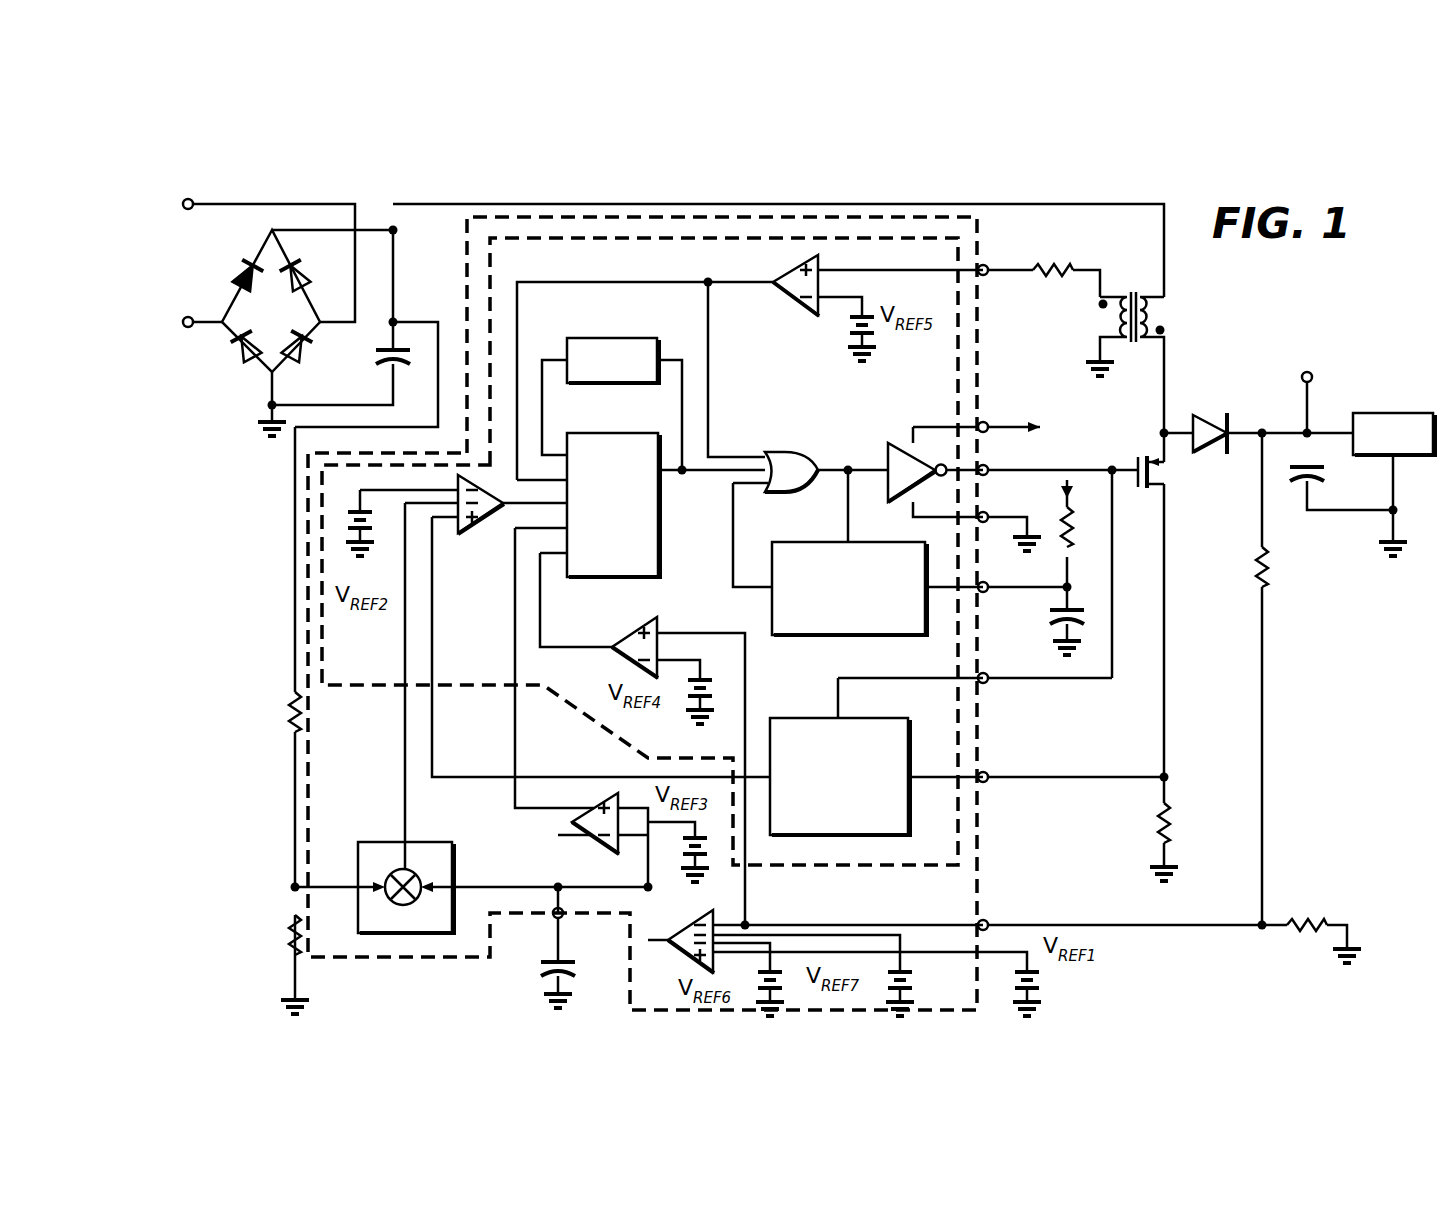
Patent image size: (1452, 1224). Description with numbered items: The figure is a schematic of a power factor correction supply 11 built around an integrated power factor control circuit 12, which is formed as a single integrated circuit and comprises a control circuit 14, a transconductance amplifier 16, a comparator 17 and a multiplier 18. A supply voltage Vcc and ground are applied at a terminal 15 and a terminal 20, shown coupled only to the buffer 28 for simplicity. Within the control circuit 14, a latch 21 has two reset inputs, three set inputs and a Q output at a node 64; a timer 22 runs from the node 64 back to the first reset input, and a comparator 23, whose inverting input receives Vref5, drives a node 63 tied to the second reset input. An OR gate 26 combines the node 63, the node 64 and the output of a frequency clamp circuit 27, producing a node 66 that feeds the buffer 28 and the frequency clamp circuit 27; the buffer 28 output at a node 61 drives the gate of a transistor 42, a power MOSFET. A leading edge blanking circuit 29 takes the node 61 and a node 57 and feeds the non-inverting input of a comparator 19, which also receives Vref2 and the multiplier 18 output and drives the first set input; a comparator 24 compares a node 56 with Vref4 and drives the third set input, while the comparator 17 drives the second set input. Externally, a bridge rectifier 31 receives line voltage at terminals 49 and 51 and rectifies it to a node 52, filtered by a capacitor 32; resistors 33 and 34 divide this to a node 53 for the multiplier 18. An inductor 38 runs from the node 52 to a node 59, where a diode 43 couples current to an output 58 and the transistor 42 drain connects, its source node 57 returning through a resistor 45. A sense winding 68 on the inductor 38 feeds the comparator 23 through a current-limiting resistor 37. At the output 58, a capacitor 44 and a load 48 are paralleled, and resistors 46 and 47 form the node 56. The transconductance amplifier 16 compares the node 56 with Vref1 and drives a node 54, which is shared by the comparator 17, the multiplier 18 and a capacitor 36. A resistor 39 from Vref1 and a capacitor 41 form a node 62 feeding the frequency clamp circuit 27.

The power supply 11 is at (1298, 312).
The integrated power factor control circuit 12 is at (975, 225).
The control circuit 14 is at (892, 868).
The terminal 15 is at (988, 424).
The transconductance amplifier 16 is at (668, 952).
The comparator 17 is at (592, 806).
The multiplier 18 is at (452, 872).
The comparator 19 is at (480, 536).
The terminal 20 is at (988, 524).
The latch 21 is at (659, 540).
The timer 22 is at (566, 340).
The comparator 23 is at (790, 300).
The comparator 24 is at (616, 638).
The OR gate 26 is at (806, 452).
The frequency clamp circuit 27 is at (770, 608).
The buffer 28 is at (875, 455).
The leading edge blanking circuit 29 is at (802, 716).
The bridge rectifier 31 is at (238, 278).
The capacitor 32 is at (376, 362).
The resistor 33 is at (288, 708).
The resistor 34 is at (286, 940).
The capacitor 36 is at (542, 972).
The resistor 37 is at (1056, 265).
The inductor 38 is at (1155, 307).
The resistor 39 is at (1073, 530).
The capacitor 41 is at (1046, 622).
The transistor 42 is at (1162, 466).
The diode 43 is at (1222, 412).
The capacitor 44 is at (1326, 470).
The resistor 45 is at (1168, 816).
The resistor 46 is at (1258, 568).
The resistor 47 is at (1308, 940).
The load 48 is at (1402, 412).
The terminal 49 is at (193, 326).
The terminal 51 is at (193, 208).
The node 52 is at (392, 228).
The node 53 is at (290, 892).
The node 54 is at (554, 885).
The node 56 is at (1265, 922).
The node 57 is at (1168, 776).
The output 58 is at (1312, 382).
The node 59 is at (1160, 432).
The node 61 is at (1110, 468).
The node 62 is at (1070, 592).
The node 63 is at (705, 285).
The node 64 is at (684, 472).
The node 66 is at (845, 476).
The sense winding 68 is at (1112, 322).